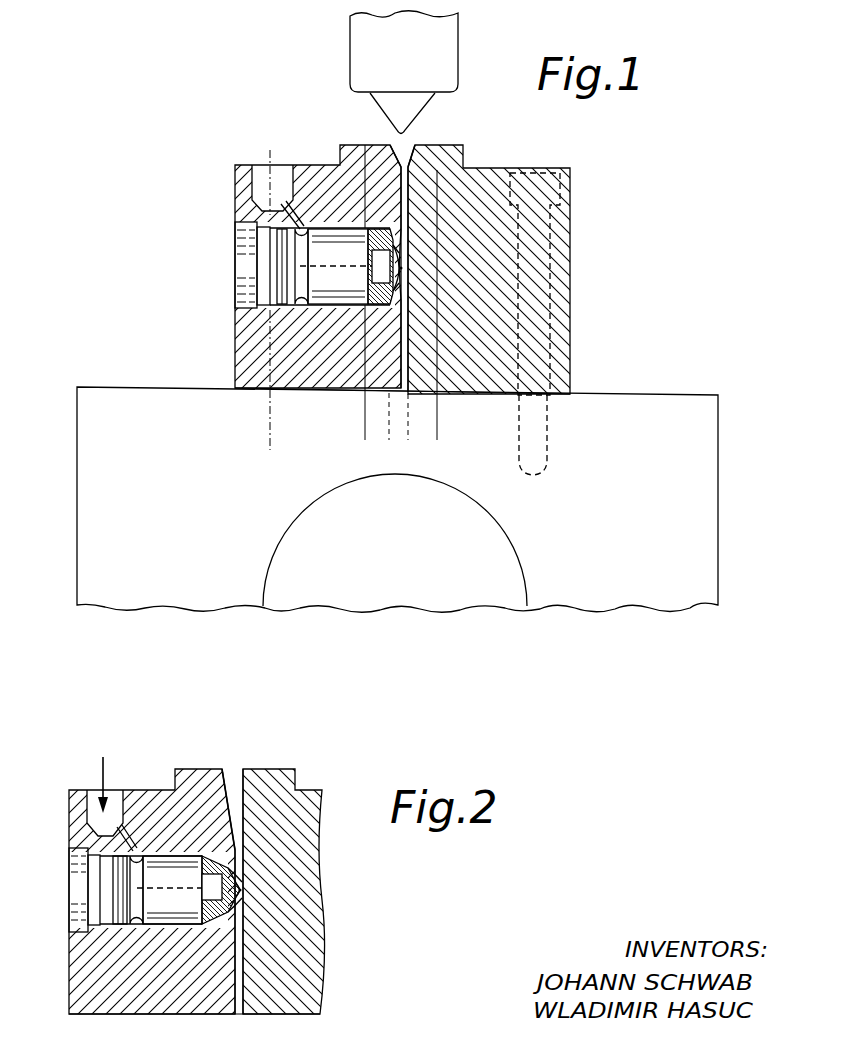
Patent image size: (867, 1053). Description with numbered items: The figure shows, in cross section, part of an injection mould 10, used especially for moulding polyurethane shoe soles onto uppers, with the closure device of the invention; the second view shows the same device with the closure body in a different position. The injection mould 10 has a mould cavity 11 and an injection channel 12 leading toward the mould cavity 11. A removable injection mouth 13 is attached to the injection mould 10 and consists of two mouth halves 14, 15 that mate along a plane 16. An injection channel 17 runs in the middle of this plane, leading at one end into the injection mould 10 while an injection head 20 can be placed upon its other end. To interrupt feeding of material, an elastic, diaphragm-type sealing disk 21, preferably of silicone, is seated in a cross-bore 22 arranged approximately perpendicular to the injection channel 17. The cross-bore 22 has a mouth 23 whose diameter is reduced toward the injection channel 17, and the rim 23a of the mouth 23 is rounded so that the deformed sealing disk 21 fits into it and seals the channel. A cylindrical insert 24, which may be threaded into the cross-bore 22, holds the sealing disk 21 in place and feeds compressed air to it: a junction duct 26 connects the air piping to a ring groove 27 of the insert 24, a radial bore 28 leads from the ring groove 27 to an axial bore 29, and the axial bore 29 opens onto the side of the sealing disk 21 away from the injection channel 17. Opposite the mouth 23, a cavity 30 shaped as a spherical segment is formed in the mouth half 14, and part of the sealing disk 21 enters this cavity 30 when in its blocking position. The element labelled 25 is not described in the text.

In FIG. 1, the injection mould 10 is at (604, 364).
In FIG. 1, the mould cavity 11 is at (325, 585).
In FIG. 1, the injection channel 12 is at (391, 470).
In FIG. 1, the injection mouth 13 is at (582, 195).
In FIG. 2, the injection mouth 13 is at (332, 872).
In FIG. 1, the mouth half 14 is at (473, 180).
In FIG. 2, the mouth half 14 is at (307, 800).
In FIG. 1, the mouth half 15 is at (323, 177).
In FIG. 2, the mouth half 15 is at (68, 800).
In FIG. 1, the plane 16 is at (390, 148).
In FIG. 2, the plane 16 is at (244, 783).
In FIG. 1, the injection channel 17 is at (410, 185).
In FIG. 2, the injection channel 17 is at (246, 823).
In FIG. 1, the injection head 20 is at (352, 53).
In FIG. 1, the sealing disk 21 is at (407, 268).
In FIG. 2, the sealing disk 21 is at (243, 892).
In FIG. 1, the cross-bore 22 is at (317, 303).
In FIG. 2, the cross-bore 22 is at (108, 928).
In FIG. 1, the mouth 23 is at (402, 283).
In FIG. 2, the mouth 23 is at (243, 883).
In FIG. 1, the rim 23a is at (407, 248).
In FIG. 2, the rim 23a is at (240, 873).
In FIG. 1, the insert 24 is at (347, 293).
In FIG. 2, the insert 24 is at (177, 917).
In FIG. 1, the pressure fluid inlet 25 is at (263, 180).
In FIG. 2, the pressure fluid inlet 25 is at (117, 791).
In FIG. 1, the junction duct 26 is at (297, 175).
In FIG. 2, the junction duct 26 is at (130, 846).
In FIG. 1, the ring groove 27 is at (300, 300).
In FIG. 2, the ring groove 27 is at (137, 920).
In FIG. 1, the radial bore 28 is at (300, 257).
In FIG. 2, the radial bore 28 is at (137, 873).
In FIG. 1, the axial bore 29 is at (352, 270).
In FIG. 2, the axial bore 29 is at (162, 887).
In FIG. 1, the cavity 30 is at (403, 260).
In FIG. 2, the cavity 30 is at (241, 903).